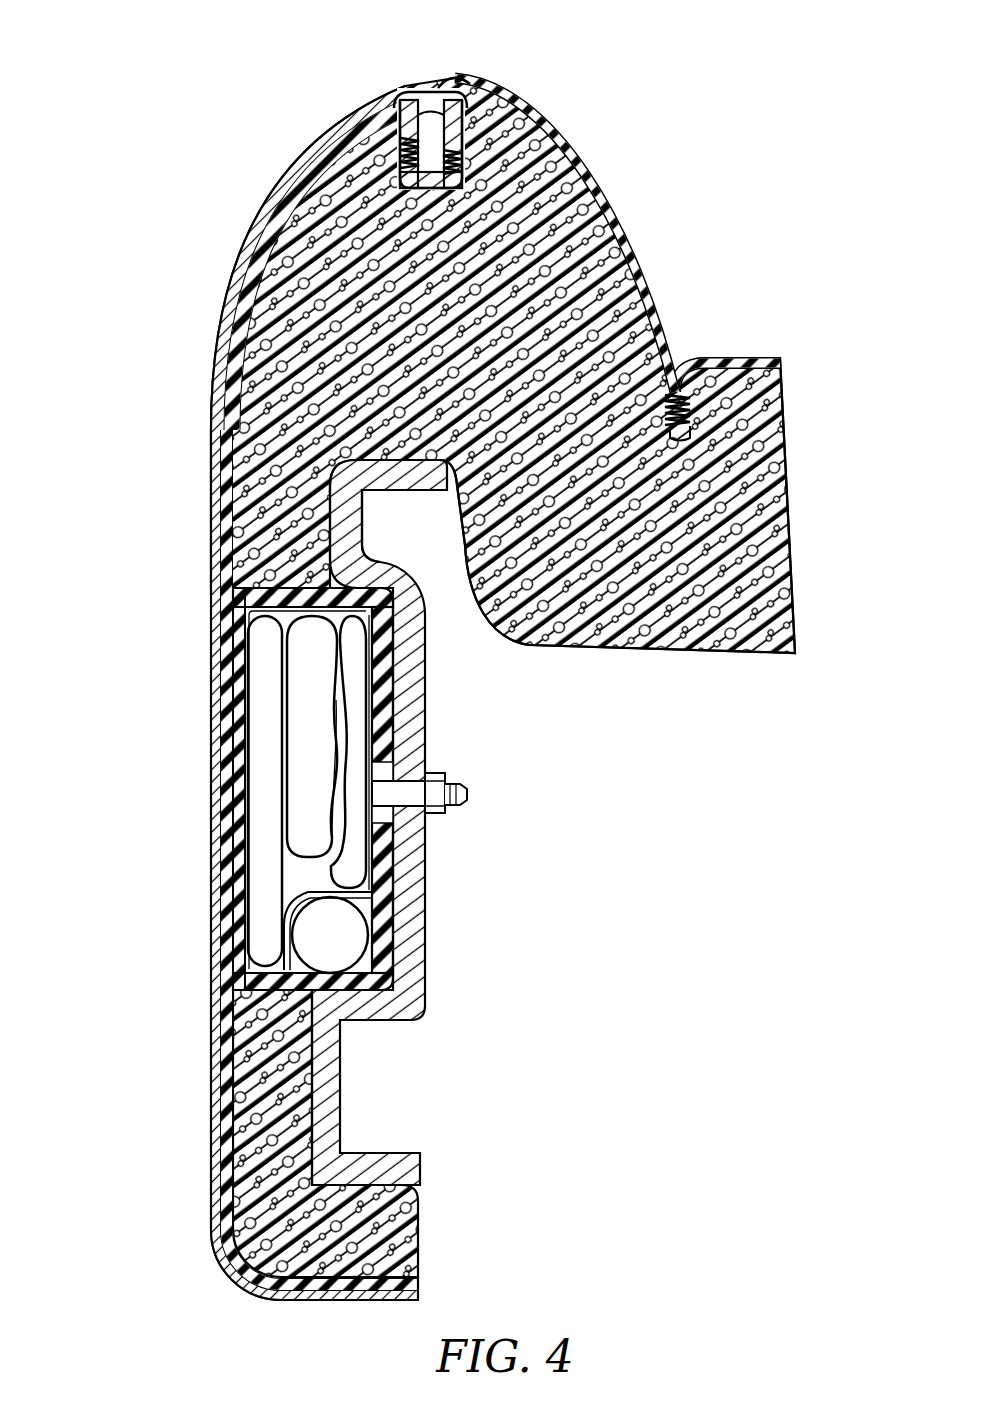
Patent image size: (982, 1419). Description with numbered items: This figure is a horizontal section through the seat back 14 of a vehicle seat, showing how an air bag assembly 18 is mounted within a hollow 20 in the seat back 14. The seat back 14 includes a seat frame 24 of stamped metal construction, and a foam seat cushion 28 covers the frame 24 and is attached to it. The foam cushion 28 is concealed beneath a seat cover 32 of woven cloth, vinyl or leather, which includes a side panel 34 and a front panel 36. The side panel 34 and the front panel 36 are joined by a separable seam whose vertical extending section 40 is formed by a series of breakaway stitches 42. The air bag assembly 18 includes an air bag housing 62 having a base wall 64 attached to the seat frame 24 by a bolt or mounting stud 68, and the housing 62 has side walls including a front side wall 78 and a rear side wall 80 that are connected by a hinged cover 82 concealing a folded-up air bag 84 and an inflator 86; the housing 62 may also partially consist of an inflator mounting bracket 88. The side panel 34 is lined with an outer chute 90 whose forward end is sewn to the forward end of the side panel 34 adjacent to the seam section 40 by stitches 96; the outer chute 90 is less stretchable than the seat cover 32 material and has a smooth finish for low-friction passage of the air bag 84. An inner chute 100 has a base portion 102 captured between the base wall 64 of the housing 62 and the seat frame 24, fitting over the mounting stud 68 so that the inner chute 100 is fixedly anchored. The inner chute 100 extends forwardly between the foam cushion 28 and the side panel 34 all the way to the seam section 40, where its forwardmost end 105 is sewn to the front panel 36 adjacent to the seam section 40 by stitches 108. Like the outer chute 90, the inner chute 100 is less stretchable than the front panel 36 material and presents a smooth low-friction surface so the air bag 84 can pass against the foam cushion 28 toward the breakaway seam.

The seat back 14 is at (592, 180).
The air bag assembly 18 is at (350, 768).
The hollow 20 is at (247, 627).
The seat frame 24 is at (412, 722).
The foam seat cushion 28 is at (288, 360).
The seat cover 32 is at (287, 180).
The side panel 34 is at (208, 490).
The front panel 36 is at (640, 274).
The vertical extending section 40 is at (418, 104).
The breakaway stitches 42 is at (425, 95).
The air bag housing 62 is at (382, 830).
The base wall 64 is at (376, 910).
The mounting stud 68 is at (466, 800).
The front side wall 78 is at (345, 575).
The rear side wall 80 is at (370, 990).
The hinged cover 82 is at (230, 877).
The air bag 84 is at (296, 745).
The inflator 86 is at (346, 945).
The mounting bracket 88 is at (384, 893).
The outer chute 90 is at (216, 355).
The stitches 96 is at (405, 140).
The inner chute 100 is at (228, 437).
The base portion 102 is at (396, 680).
The forwardmost end 105 is at (455, 94).
The stitches 108 is at (452, 160).